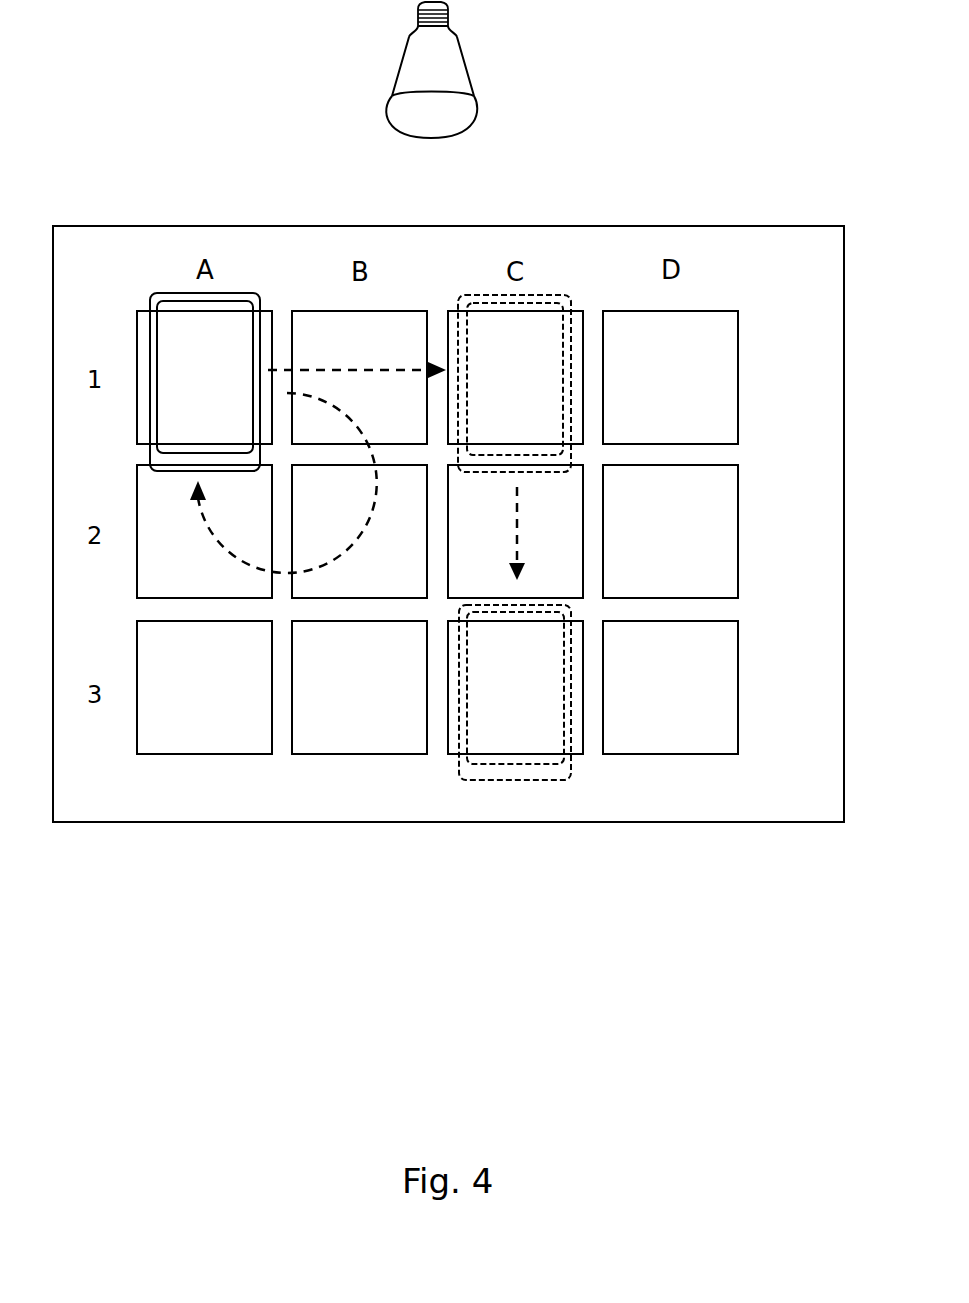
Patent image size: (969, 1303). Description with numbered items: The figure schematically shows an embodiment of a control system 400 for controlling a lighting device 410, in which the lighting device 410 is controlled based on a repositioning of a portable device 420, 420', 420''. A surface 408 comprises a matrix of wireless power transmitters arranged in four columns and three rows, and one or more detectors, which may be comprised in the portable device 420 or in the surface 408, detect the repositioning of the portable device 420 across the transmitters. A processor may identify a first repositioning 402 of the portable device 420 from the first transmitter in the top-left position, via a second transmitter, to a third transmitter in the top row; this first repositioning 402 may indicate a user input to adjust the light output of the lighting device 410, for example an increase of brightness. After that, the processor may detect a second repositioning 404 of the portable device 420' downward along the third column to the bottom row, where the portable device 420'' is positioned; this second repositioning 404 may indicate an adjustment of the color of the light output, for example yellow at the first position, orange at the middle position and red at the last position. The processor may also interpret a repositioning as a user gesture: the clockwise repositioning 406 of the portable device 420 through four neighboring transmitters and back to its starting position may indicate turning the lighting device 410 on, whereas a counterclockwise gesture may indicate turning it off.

The control system 400 is at (178, 189).
The first repositioning 402 is at (395, 370).
The second repositioning 404 is at (520, 532).
The repositioning 406 is at (246, 570).
The surface 408 is at (723, 255).
The lighting device 410 is at (443, 55).
The portable device 420 is at (229, 319).
The portable device 420' is at (570, 383).
The portable device 420'' is at (576, 692).